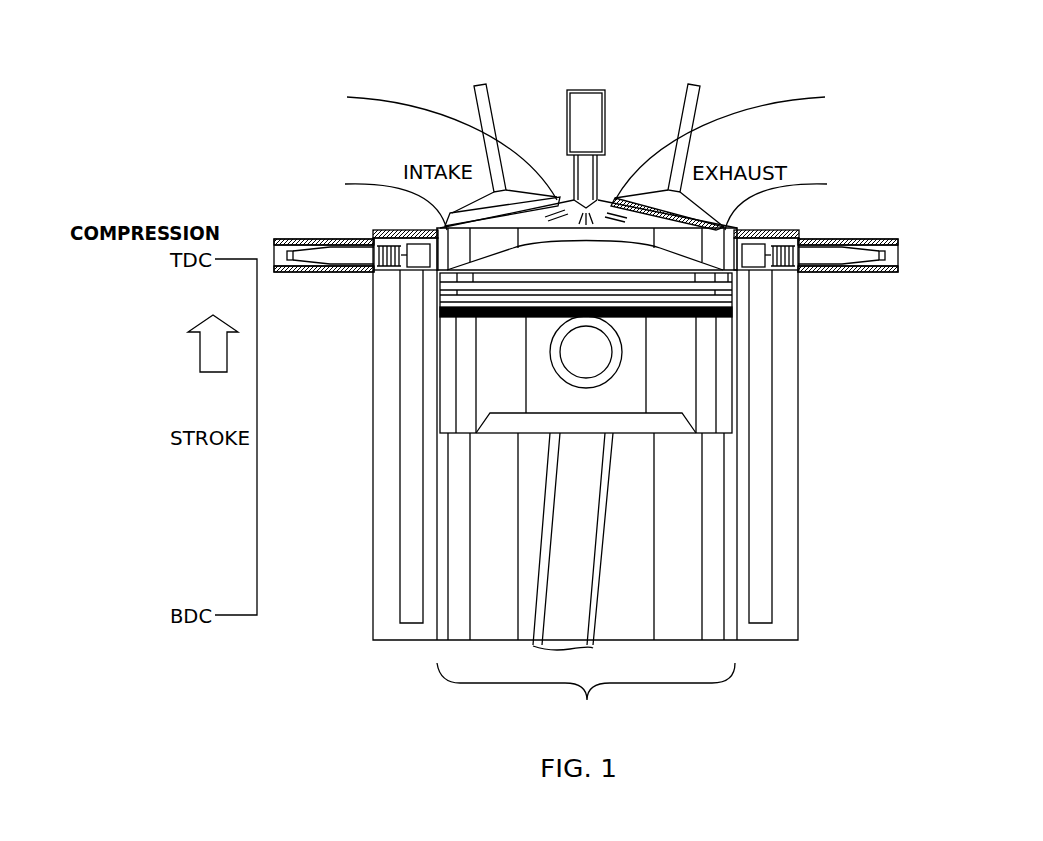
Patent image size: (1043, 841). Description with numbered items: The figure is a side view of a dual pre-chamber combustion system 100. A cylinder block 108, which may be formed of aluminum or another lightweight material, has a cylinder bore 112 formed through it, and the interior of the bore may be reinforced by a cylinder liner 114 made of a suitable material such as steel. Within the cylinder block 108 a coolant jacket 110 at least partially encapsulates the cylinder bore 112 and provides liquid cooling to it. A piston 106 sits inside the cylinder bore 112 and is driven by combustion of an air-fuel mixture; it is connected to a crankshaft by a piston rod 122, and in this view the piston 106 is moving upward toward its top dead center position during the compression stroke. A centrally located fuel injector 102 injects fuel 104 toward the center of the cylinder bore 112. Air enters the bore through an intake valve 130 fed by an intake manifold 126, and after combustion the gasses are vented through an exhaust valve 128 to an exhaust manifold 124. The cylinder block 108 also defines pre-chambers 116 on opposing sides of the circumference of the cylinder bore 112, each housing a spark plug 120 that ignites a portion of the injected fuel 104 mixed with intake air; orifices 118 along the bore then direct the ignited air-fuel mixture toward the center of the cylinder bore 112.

The dual pre-chamber combustion system 100 is at (955, 193).
The fuel injector 102 is at (590, 110).
The fuel 104 is at (606, 208).
The piston 106 is at (463, 373).
The cylinder block 108 is at (777, 343).
The coolant jacket 110 is at (760, 373).
The cylinder bore 112 is at (743, 410).
The cylinder liner 114 is at (737, 447).
The pre-chambers 116 is at (402, 246).
The orifices/apertures 118 is at (408, 229).
The spark plugs 120 is at (327, 243).
The piston rod 122 is at (593, 627).
The exhaust manifold 124 is at (797, 97).
The intake manifold 126 is at (375, 94).
The exhaust valve 128 is at (700, 100).
The intake valve 130 is at (471, 96).